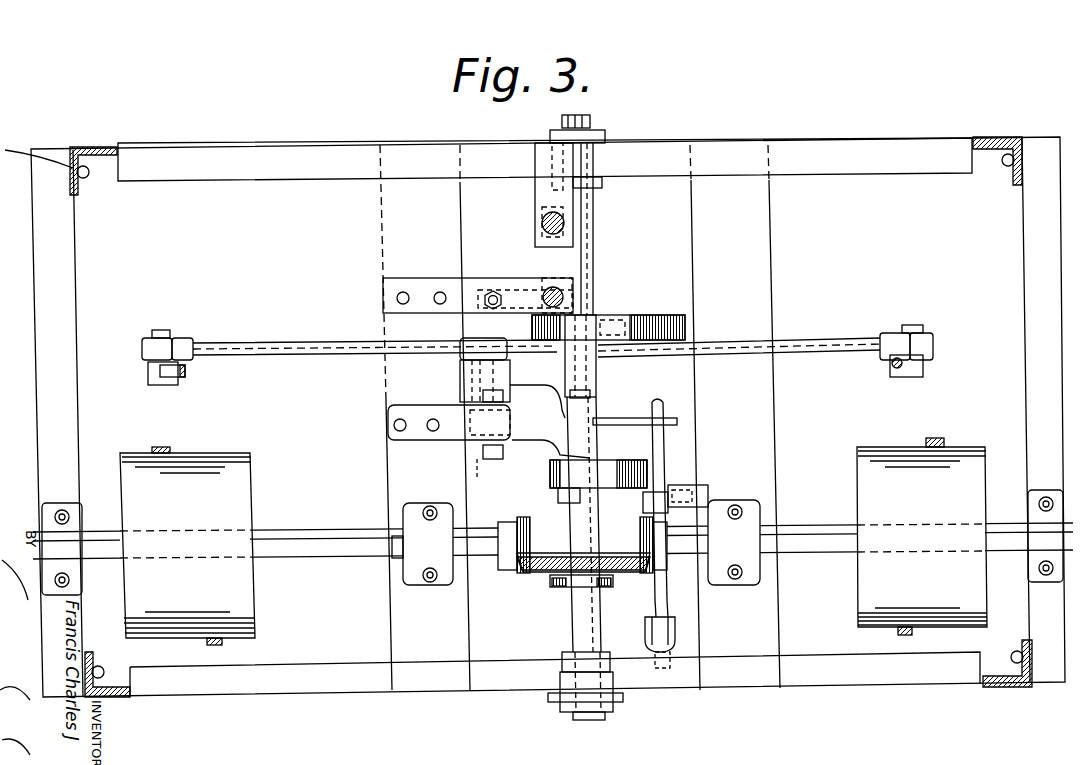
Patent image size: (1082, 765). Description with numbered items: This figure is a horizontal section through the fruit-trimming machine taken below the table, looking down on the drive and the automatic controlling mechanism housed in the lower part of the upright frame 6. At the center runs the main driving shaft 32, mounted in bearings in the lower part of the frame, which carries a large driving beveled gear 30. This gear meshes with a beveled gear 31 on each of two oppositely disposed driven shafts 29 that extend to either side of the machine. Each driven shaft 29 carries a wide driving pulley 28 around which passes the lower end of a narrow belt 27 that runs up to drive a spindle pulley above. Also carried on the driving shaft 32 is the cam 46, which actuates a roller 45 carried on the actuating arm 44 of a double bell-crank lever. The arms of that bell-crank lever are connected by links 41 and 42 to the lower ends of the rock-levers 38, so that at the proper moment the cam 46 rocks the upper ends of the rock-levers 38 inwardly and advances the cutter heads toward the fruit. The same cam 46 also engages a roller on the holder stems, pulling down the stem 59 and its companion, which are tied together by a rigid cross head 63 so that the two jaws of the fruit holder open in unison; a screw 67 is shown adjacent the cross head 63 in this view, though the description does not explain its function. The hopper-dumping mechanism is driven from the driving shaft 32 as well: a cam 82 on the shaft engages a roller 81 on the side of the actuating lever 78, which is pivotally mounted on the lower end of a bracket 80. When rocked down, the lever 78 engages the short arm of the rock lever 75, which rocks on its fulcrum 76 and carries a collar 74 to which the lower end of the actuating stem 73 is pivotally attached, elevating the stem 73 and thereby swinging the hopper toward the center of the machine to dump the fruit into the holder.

The upright frame 6 is at (988, 686).
The belt 27 is at (945, 440).
The driving pulley 28 is at (870, 480).
The driven shaft 29 is at (825, 553).
The driving beveled gear 30 is at (545, 582).
The beveled gear 31 is at (638, 537).
The driving shaft 32 is at (578, 603).
The rock-lever 38 is at (907, 370).
The link 41 is at (313, 353).
The link 42 is at (820, 349).
The actuating arm 44 is at (628, 372).
The roller 45 is at (593, 340).
The cam 46 is at (637, 316).
The stem 59 is at (542, 222).
The cross head 63 is at (550, 258).
The clamp screw 67 is at (545, 292).
The actuating stem 73 is at (653, 607).
The collar 74 is at (647, 640).
The rock lever 75 is at (664, 452).
The fulcrum 76 is at (643, 499).
The actuating lever 78 is at (625, 420).
The bracket 80 is at (489, 418).
The roller 81 is at (558, 503).
The cam 82 is at (568, 480).